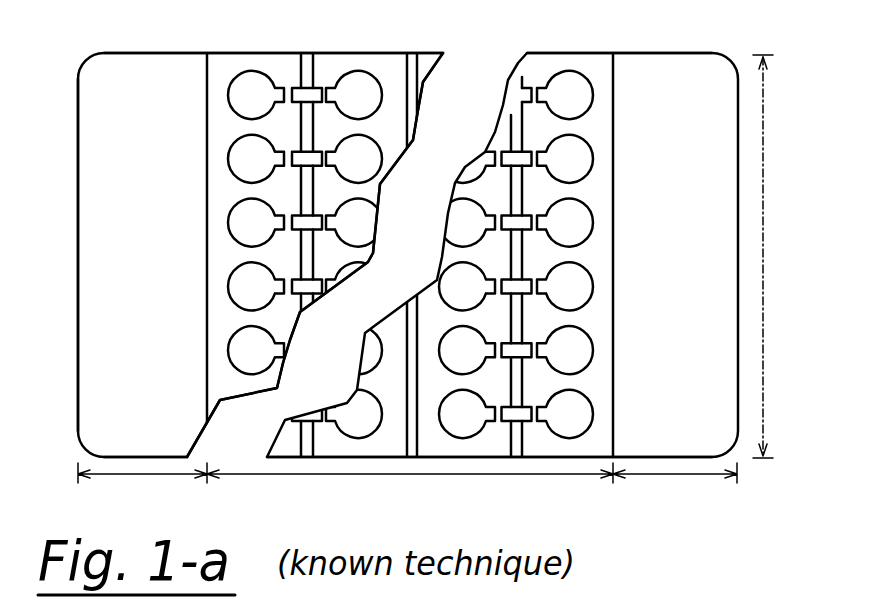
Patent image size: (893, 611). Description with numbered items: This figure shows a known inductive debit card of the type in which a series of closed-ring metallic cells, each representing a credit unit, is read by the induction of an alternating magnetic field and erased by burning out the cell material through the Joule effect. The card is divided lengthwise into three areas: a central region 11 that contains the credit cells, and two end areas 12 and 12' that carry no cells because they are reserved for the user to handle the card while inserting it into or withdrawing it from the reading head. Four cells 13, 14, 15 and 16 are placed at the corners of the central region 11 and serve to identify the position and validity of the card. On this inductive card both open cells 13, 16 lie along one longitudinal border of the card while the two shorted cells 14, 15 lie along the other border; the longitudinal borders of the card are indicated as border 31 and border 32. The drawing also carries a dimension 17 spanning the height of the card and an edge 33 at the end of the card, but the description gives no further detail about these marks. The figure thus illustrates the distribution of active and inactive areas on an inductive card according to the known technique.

The central region 11 is at (372, 481).
The end area 12 is at (142, 499).
The end area 12' is at (675, 499).
The identifying cell 13 is at (242, 437).
The identifying cell 14 is at (237, 97).
The identifying cell 15 is at (577, 96).
The identifying cell 16 is at (570, 416).
The strip width 17 is at (796, 256).
The border 31 is at (253, 50).
The border 32 is at (568, 467).
The left edge 33 is at (78, 322).